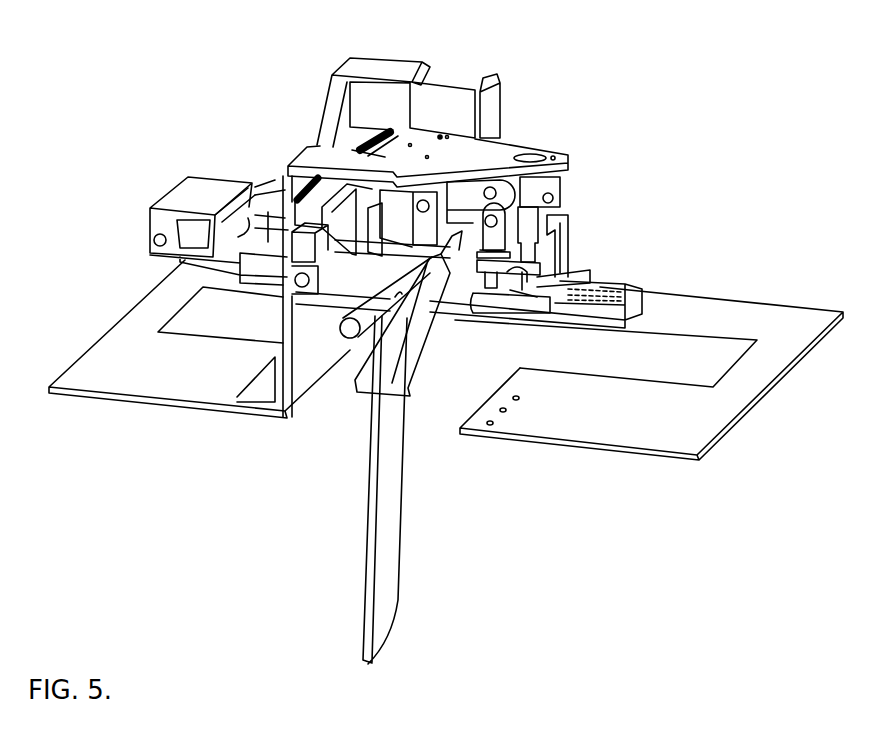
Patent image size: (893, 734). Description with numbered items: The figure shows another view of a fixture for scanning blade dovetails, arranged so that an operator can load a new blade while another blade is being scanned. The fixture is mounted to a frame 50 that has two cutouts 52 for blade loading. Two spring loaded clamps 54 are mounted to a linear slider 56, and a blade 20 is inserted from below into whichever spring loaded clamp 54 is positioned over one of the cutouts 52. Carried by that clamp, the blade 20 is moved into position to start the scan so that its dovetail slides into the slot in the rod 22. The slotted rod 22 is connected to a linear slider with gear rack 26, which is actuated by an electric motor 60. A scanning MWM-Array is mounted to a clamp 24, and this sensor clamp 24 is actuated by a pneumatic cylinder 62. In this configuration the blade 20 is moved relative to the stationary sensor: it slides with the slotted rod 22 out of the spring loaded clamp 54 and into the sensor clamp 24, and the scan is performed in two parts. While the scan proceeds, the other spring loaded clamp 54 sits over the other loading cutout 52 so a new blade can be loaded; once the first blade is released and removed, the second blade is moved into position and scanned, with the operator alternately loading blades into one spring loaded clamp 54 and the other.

The blade 20 is at (388, 540).
The rod 22 is at (346, 337).
The clamp 24 is at (447, 270).
The linear slider with gear rack 26 is at (300, 192).
The frame 50 is at (113, 375).
The cutouts 52 is at (218, 325).
The spring loaded clamps 54 is at (213, 195).
The linear slider 56 is at (615, 280).
The electric motor 60 is at (450, 96).
The pneumatic cylinder 62 is at (528, 223).